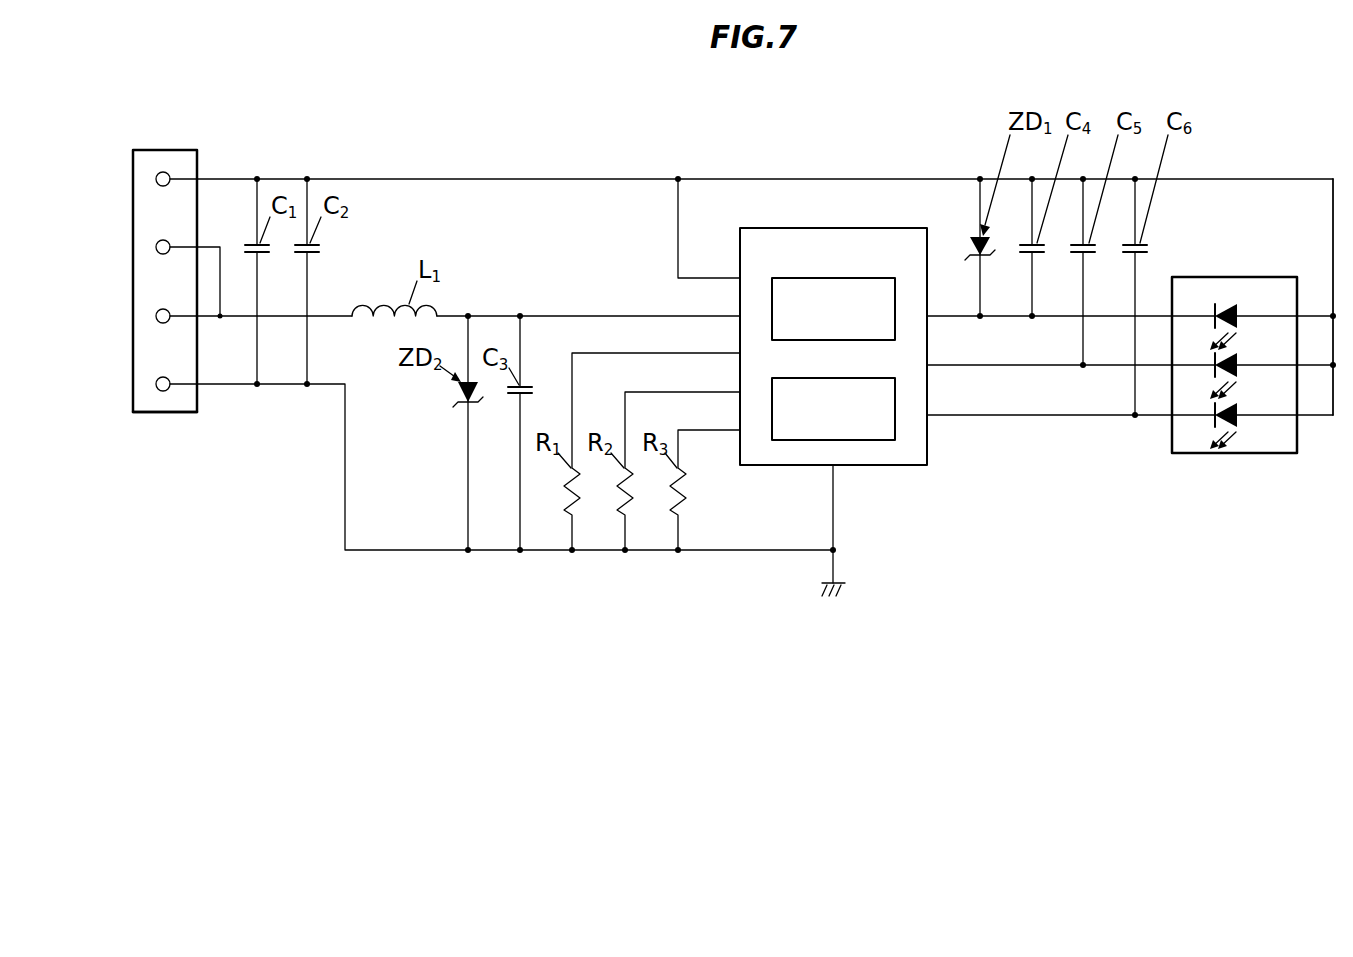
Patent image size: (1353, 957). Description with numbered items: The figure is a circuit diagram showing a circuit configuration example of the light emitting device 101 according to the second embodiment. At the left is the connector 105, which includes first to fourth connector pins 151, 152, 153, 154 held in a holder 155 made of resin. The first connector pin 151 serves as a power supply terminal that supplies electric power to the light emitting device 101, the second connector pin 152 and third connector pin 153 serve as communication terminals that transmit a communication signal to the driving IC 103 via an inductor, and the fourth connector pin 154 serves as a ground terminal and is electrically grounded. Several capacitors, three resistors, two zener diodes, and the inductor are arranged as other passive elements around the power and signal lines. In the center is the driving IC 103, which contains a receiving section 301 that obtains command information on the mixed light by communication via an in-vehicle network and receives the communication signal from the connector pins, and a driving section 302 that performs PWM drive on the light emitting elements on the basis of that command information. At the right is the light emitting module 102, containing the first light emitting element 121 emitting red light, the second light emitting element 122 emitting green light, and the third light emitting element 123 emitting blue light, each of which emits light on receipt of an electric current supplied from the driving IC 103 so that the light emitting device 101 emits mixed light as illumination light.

The light emitting device 101 is at (1254, 145).
The light emitting module 102 is at (1216, 456).
The driving IC 103 is at (833, 227).
The connector 105 is at (154, 145).
The first light emitting element 121 is at (1237, 310).
The second light emitting element 122 is at (1237, 359).
The third light emitting element 123 is at (1237, 409).
The first connector pin 151 is at (156, 178).
The second connector pin 152 is at (156, 246).
The third connector pin 153 is at (156, 315).
The fourth connector pin 154 is at (156, 383).
The holder 155 is at (164, 415).
The receiving section 301 is at (867, 276).
The driving section 302 is at (867, 376).